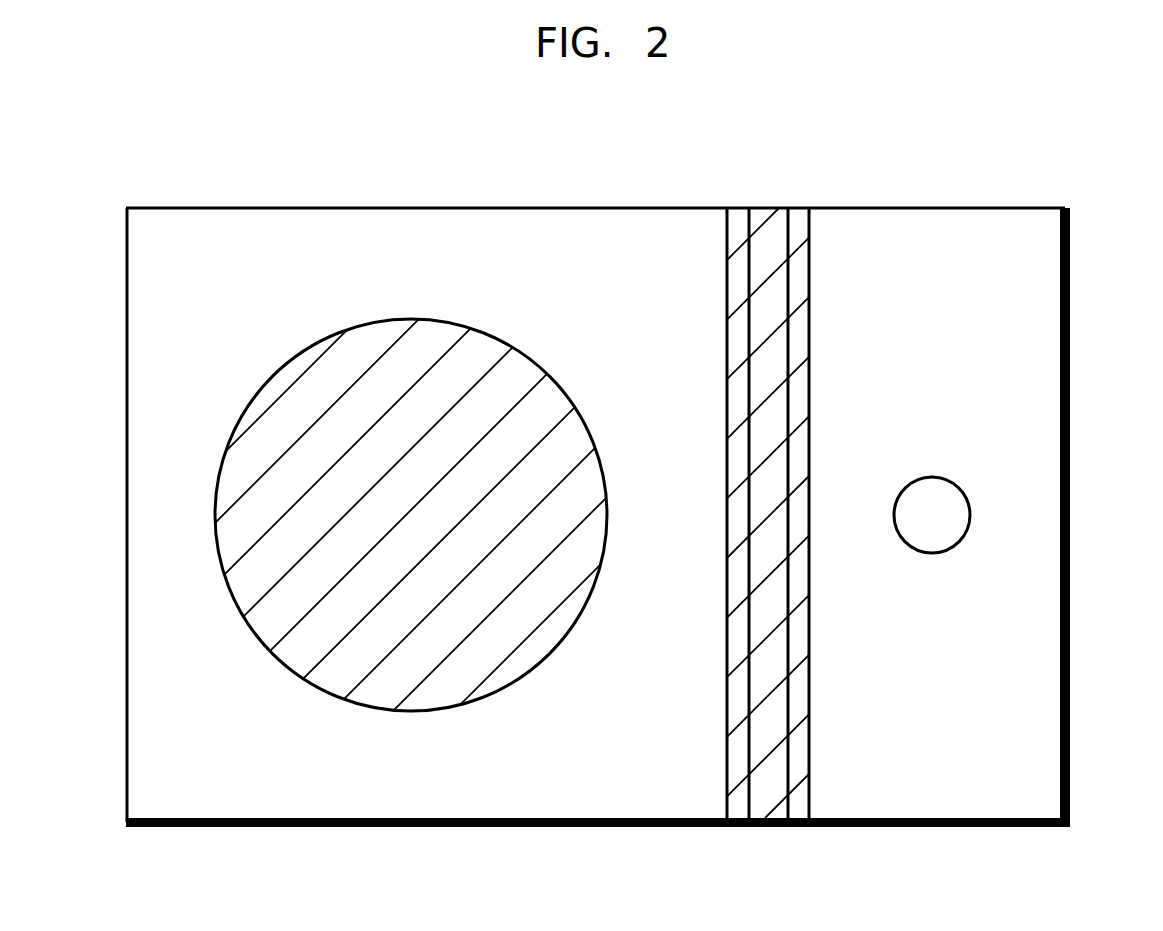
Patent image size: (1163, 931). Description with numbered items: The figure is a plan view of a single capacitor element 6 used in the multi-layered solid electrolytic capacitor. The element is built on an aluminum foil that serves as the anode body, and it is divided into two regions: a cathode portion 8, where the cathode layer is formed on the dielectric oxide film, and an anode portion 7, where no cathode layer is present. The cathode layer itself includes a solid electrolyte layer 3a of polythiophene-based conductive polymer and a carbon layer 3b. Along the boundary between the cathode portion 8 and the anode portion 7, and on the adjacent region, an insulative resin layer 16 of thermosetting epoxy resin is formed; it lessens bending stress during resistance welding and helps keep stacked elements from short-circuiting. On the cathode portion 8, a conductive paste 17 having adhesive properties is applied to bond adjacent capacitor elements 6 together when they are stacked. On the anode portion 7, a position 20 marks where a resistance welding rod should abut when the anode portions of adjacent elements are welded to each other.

The capacitor element 6 is at (630, 484).
The cathode portion 8 is at (448, 788).
The anode portion 7 is at (888, 790).
The insulative resin layer 16 is at (826, 504).
The solid electrolyte layer 3a is at (765, 220).
The carbon layer 3b is at (768, 513).
The conductive paste 17 is at (402, 365).
The position to which a resistance welding rod should abut 20 is at (950, 517).